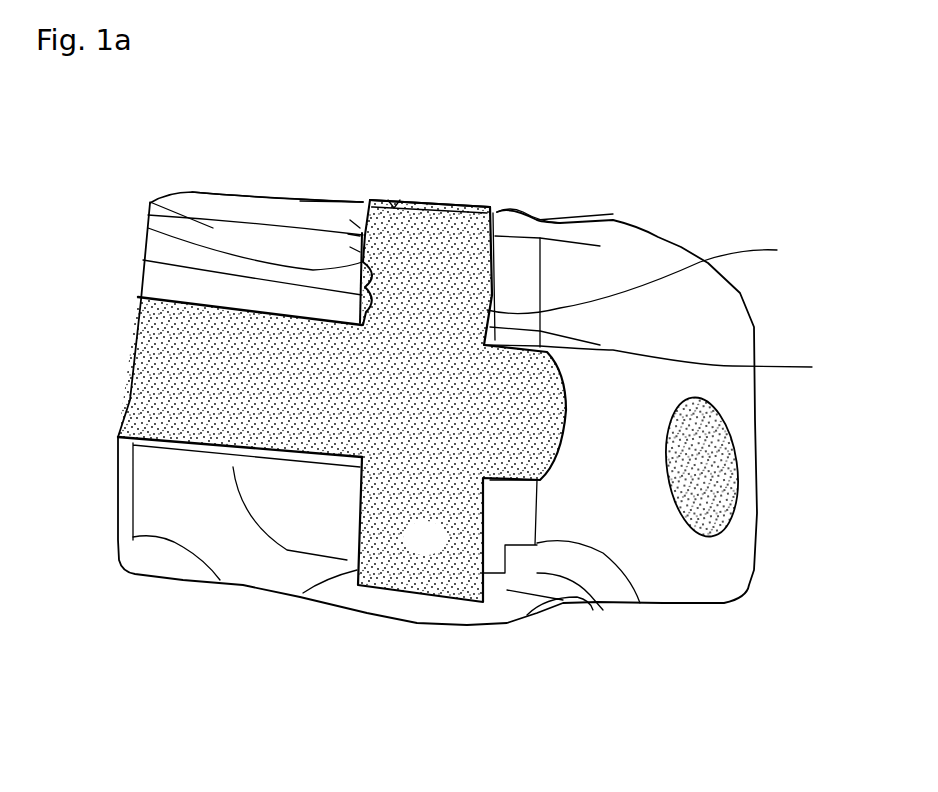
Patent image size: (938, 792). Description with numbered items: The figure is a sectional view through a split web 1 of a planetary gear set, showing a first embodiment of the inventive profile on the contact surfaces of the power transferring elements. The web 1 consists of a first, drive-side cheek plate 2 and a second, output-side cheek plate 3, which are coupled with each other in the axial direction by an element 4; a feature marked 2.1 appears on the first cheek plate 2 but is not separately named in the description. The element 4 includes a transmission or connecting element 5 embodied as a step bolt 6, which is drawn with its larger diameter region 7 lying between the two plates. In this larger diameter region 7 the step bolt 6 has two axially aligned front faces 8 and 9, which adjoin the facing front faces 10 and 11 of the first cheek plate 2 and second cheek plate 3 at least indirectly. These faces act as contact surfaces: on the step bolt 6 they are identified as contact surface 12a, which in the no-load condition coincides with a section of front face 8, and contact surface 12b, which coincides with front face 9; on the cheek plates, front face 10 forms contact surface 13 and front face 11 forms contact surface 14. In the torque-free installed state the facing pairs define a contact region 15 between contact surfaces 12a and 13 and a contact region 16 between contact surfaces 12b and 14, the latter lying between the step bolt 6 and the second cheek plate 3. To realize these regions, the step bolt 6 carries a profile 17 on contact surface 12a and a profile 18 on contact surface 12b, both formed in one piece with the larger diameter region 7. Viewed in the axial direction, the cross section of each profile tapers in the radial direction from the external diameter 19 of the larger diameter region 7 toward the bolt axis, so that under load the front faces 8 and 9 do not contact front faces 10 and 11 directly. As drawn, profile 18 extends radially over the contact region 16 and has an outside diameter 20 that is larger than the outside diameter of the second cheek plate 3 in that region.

The split web 1 is at (234, 158).
The first cheek plate 2 is at (687, 323).
The surface of component 2.1 is at (247, 217).
The second cheek plate 3 is at (152, 200).
The element 4 is at (514, 162).
The transmission element 5 is at (437, 240).
The step bolt 6 is at (417, 233).
The larger diameter region 7 is at (433, 552).
The front face 8 is at (639, 277).
The front face 9 is at (362, 240).
The front face 10 is at (600, 246).
The front face 11 is at (140, 258).
The contact surface 12a is at (528, 213).
The contact surface 12b is at (213, 230).
The contact surface 13 is at (467, 218).
The contact surface 14 is at (377, 320).
The contact region 15 is at (513, 233).
The contact region 16 is at (280, 178).
The profile 17 is at (664, 362).
The profile 18 is at (348, 305).
The external diameter 19 is at (397, 200).
The outside diameter 20 is at (323, 207).